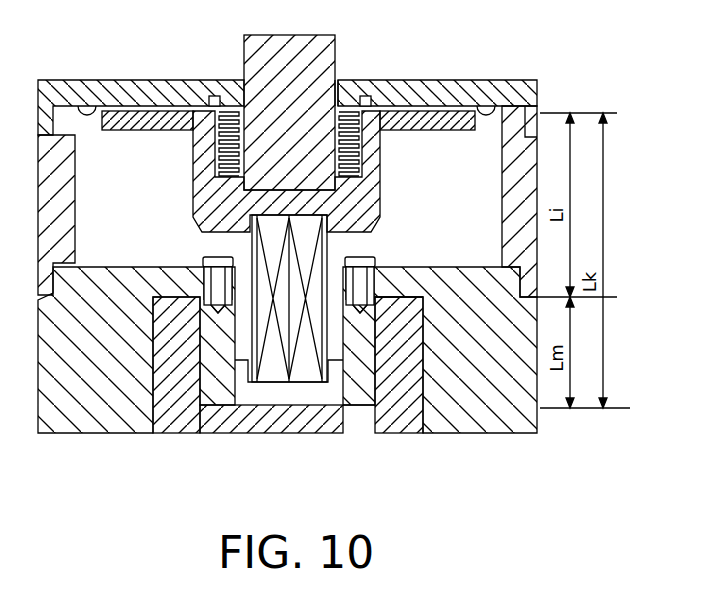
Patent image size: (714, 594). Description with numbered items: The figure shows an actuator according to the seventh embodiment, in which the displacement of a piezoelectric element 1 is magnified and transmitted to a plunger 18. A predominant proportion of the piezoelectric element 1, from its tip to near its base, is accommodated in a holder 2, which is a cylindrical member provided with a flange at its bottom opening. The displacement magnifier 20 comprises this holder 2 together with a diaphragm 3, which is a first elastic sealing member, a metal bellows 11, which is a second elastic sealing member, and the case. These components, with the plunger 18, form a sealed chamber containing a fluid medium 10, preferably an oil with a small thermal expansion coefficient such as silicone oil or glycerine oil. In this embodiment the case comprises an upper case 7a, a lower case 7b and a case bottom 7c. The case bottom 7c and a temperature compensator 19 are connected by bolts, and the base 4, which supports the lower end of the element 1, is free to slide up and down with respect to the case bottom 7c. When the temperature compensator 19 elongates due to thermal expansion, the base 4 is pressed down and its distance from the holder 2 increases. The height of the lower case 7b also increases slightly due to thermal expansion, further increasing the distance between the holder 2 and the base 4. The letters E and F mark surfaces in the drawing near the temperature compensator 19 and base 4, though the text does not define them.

The piezoelectric element 1 is at (272, 368).
The holder 2 is at (378, 182).
The diaphragm 3 is at (482, 100).
The base 4 is at (353, 412).
The upper case 7a is at (142, 88).
The lower case 7b is at (513, 95).
The case bottom 7c is at (470, 420).
The fluid medium 10 is at (359, 140).
The metal bellows 11 is at (212, 160).
The plunger 18 is at (245, 53).
The temperature compensator 19 is at (197, 385).
The displacement magnifier 20 is at (346, 77).
The surface E is at (399, 312).
The surface F is at (369, 402).